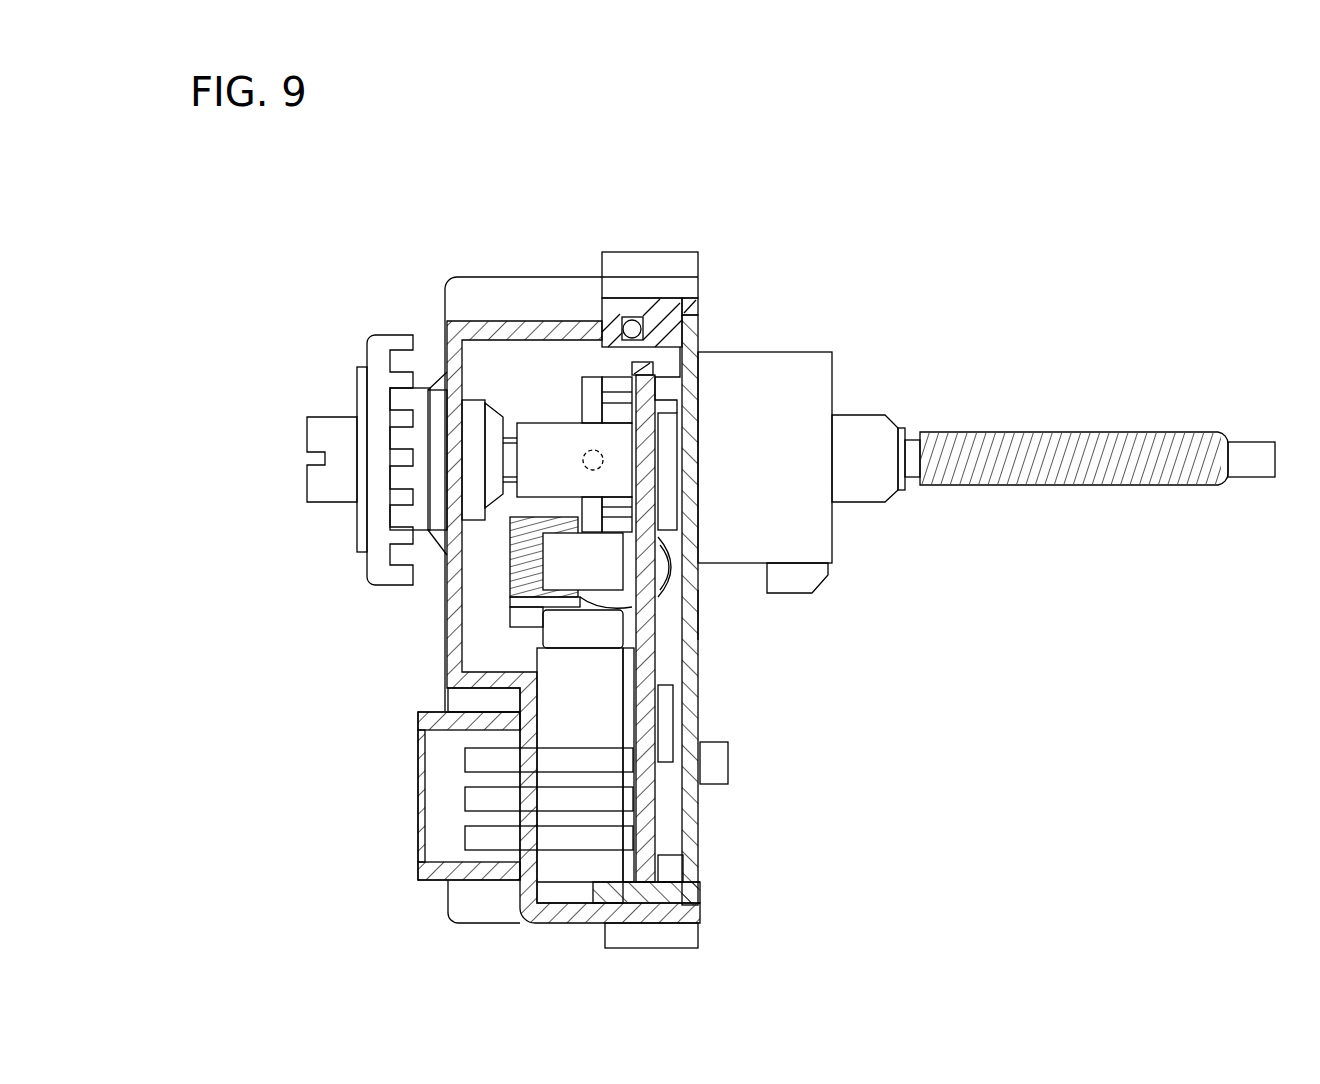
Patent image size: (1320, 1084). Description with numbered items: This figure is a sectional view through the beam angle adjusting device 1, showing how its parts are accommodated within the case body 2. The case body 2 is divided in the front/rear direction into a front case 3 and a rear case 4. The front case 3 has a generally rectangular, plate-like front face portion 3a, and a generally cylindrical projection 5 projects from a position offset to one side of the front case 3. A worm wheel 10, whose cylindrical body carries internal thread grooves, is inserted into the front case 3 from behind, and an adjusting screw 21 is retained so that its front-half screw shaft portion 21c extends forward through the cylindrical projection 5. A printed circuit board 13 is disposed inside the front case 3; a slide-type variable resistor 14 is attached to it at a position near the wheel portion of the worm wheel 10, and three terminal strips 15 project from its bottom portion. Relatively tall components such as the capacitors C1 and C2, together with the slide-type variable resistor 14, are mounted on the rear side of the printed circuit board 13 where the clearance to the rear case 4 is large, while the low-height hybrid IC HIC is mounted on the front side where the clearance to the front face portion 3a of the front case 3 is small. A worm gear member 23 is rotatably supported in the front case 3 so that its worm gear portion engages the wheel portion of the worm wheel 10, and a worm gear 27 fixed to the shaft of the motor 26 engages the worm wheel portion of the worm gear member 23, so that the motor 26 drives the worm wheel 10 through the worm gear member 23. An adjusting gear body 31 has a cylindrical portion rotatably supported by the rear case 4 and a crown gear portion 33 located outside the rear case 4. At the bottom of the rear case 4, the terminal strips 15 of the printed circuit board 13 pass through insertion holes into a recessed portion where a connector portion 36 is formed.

The beam angle adjusting device 1 is at (737, 260).
The case body 2 is at (702, 673).
The front case 3 is at (702, 848).
The front face portion 3a is at (702, 613).
The rear case 4 is at (447, 652).
The cylindrical projection 5 is at (800, 372).
The worm wheel 10 is at (618, 383).
The printed circuit board 13 is at (653, 713).
The slide-type variable resistor 14 is at (548, 430).
The terminal strips 15 is at (463, 757).
The adjusting screw 21 is at (1097, 433).
The screw shaft portion 21c is at (1085, 473).
The worm gear member 23 is at (673, 557).
The motor 26 is at (588, 723).
The worm gear 27 is at (517, 540).
The adjusting gear body 31 is at (337, 417).
The crown gear portion 33 is at (390, 338).
The connector portion 36 is at (427, 883).
The capacitor C1 is at (600, 552).
The capacitor C2 is at (553, 620).
The hybrid IC HIC is at (667, 727).